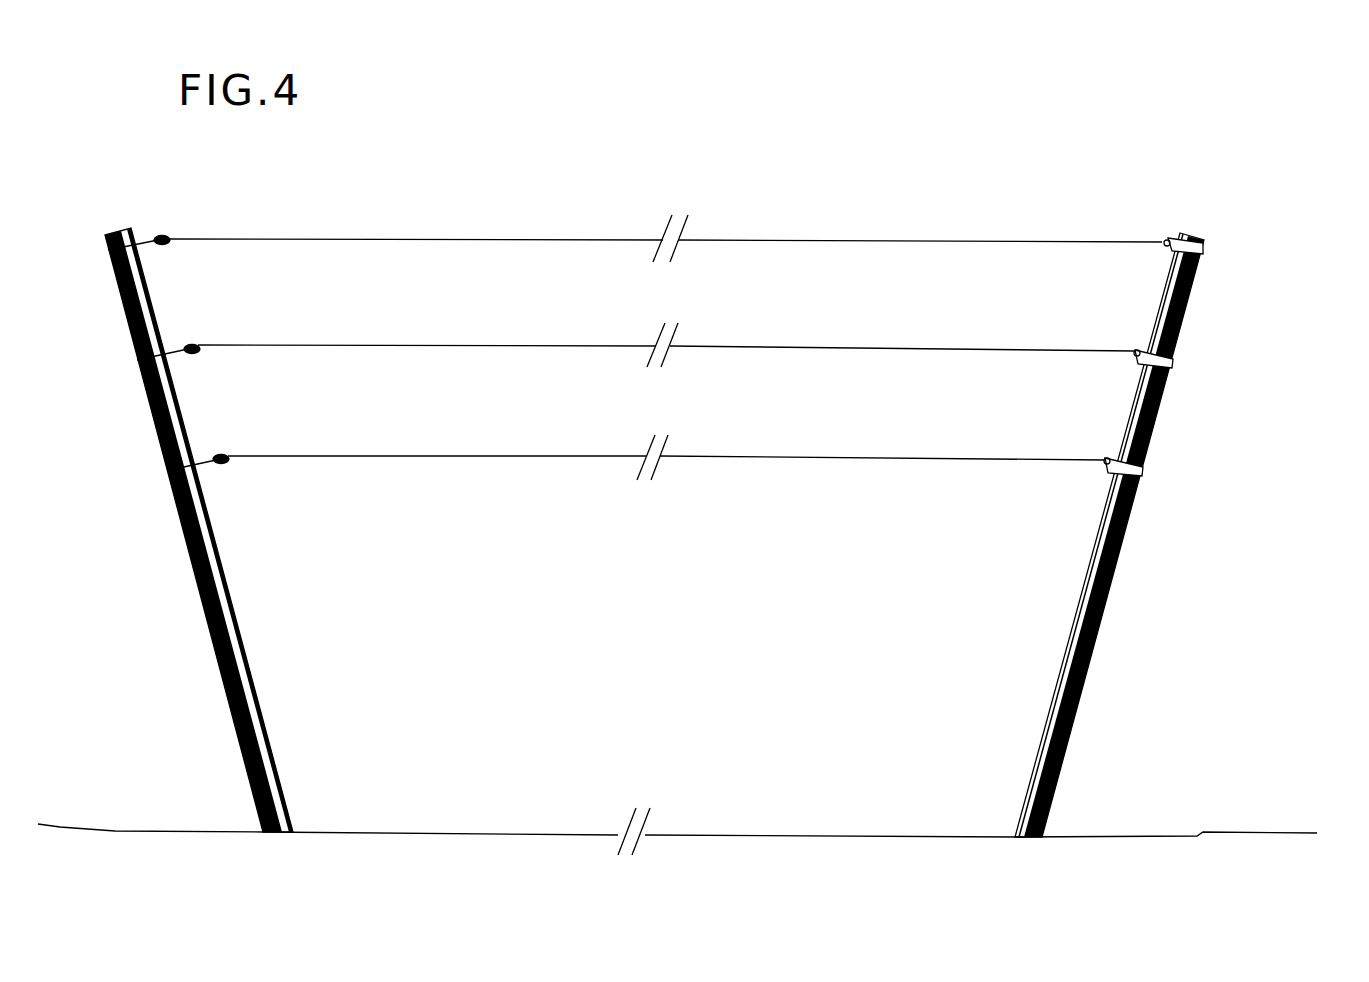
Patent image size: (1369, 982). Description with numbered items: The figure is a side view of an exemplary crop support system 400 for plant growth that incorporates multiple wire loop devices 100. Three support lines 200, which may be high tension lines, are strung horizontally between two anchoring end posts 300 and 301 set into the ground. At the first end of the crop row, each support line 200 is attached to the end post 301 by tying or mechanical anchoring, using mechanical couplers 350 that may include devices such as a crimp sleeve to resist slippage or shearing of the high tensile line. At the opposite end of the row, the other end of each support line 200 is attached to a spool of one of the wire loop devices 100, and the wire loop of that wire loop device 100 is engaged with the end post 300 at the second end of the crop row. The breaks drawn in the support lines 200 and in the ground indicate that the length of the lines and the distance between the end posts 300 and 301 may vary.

The wire loop device 100 is at (227, 445).
The support line 200 is at (450, 452).
The end post 300 is at (225, 733).
The end post 301 is at (1093, 662).
The mechanical coupler 350 is at (1147, 463).
The crop support system 400 is at (598, 217).